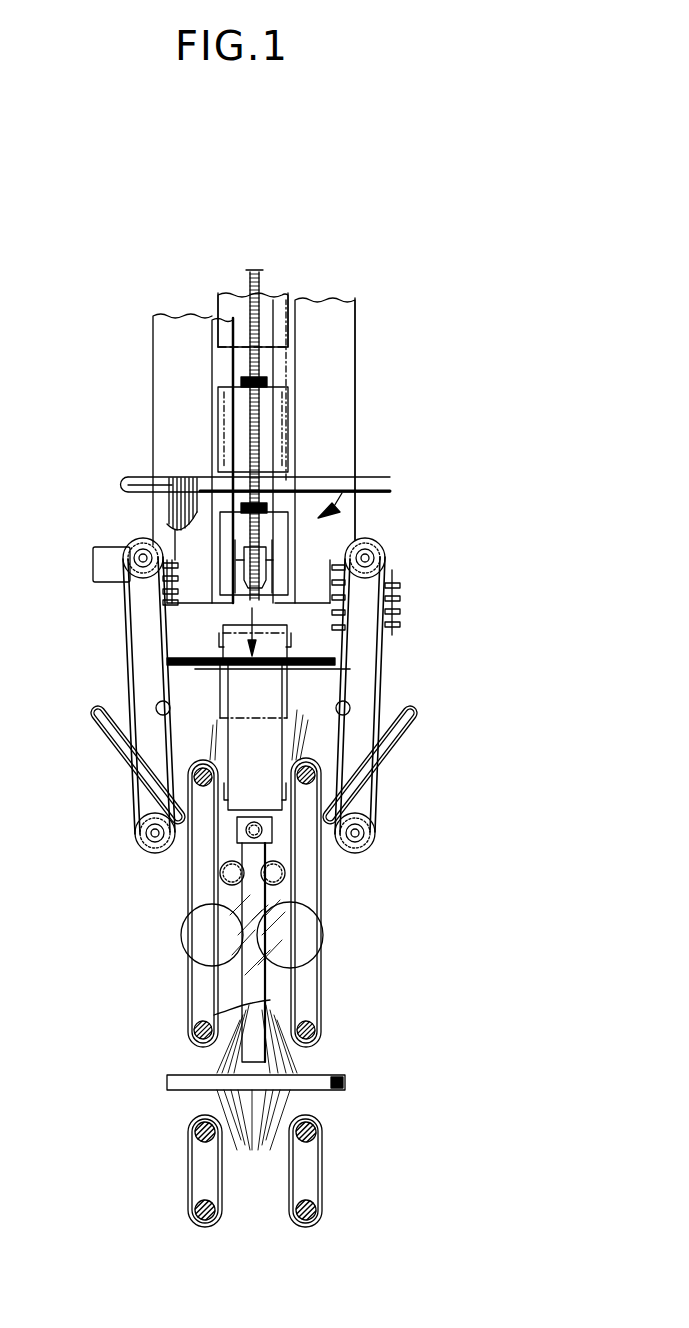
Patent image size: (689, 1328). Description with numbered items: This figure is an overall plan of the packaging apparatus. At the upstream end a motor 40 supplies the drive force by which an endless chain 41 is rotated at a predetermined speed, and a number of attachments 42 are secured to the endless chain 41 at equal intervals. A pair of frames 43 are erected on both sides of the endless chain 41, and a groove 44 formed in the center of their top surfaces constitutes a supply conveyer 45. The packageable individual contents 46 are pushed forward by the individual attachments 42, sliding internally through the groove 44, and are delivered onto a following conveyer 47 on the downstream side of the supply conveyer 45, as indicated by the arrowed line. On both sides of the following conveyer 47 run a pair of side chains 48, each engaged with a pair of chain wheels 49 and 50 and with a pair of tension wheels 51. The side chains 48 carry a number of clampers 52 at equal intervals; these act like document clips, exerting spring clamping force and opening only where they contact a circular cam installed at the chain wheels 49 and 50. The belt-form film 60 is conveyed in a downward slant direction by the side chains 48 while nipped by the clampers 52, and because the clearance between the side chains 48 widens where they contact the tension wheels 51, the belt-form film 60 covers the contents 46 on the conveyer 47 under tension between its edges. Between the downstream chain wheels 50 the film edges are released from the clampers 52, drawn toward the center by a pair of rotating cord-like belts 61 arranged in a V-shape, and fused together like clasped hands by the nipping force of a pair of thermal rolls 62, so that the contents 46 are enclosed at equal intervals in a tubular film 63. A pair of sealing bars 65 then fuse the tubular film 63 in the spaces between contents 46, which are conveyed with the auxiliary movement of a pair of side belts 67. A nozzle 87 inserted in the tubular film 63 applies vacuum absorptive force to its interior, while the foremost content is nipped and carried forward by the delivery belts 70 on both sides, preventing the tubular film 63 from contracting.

The motor 40 is at (100, 565).
The endless chain 41 is at (252, 278).
The attachments 42 is at (243, 504).
The frames 43 is at (152, 452).
The groove 44 is at (295, 378).
The supply conveyer 45 is at (347, 287).
The packageable individual contents 46 is at (282, 418).
The following conveyer 47 is at (216, 738).
The side chains 48 is at (134, 648).
The chain wheels 49 is at (135, 565).
The chain wheels 50 is at (140, 848).
The tension wheels 51 is at (156, 708).
The clampers 52 is at (175, 588).
The belt-form film 60 is at (167, 532).
The cord-like belts 61 is at (130, 745).
The thermal rolls 62 is at (187, 932).
The tubular film 63 is at (329, 1058).
The sealing bars 65 is at (167, 1080).
The side belts 67 is at (213, 987).
The delivery belts 70 is at (194, 1174).
The nozzle 87 is at (266, 1004).